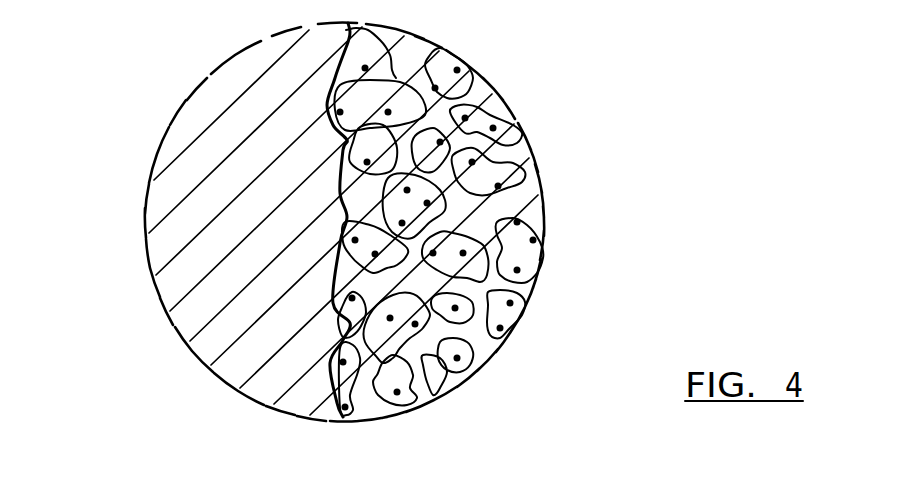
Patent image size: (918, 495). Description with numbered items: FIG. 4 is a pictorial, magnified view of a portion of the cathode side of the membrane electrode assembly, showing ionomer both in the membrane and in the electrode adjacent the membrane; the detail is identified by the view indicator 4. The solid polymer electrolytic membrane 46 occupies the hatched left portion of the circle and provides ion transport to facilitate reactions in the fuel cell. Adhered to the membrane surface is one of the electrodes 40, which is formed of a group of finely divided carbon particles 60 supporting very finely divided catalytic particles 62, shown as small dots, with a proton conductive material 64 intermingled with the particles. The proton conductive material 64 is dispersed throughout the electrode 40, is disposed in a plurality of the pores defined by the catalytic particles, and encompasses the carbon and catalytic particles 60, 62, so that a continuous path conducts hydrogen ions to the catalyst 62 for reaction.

The detail view indicator 4 is at (525, 102).
The electrodes 40 is at (543, 223).
The solid polymer electrolytic membrane 46 is at (215, 118).
The carbon particles 60 is at (398, 48).
The catalytic particles 62 is at (520, 198).
The proton conductive material 64 is at (420, 55).